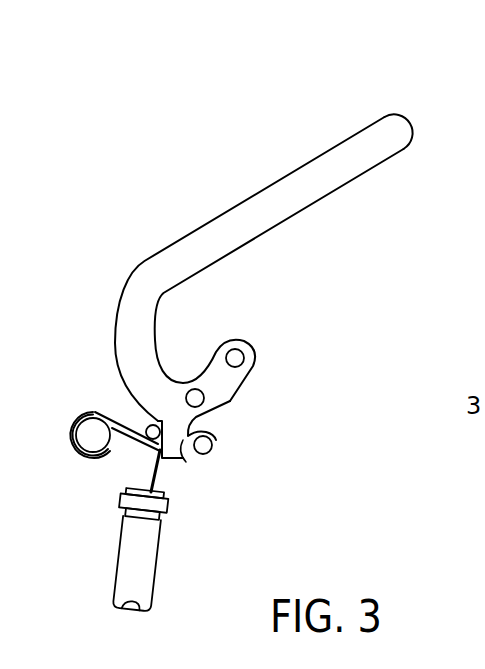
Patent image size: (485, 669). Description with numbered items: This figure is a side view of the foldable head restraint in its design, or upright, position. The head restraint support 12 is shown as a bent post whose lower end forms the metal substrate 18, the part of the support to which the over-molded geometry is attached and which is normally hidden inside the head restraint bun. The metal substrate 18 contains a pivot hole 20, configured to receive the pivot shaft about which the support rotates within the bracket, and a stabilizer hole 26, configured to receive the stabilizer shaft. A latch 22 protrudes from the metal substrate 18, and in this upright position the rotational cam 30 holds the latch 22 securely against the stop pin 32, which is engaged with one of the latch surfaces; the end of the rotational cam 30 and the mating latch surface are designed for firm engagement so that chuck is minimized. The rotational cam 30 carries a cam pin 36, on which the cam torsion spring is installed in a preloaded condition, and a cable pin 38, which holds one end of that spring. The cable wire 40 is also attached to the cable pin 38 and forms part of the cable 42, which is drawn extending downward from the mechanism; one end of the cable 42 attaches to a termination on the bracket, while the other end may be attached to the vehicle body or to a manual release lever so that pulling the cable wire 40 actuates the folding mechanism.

The head restraint support 12 is at (399, 98).
The metal substrate 18 is at (174, 382).
The pivot hole 20 is at (240, 358).
The latch 22 is at (183, 450).
The stabilizer hole 26 is at (205, 398).
The rotational cam 30 is at (122, 450).
The stop pin 32 is at (212, 445).
The cam pin 36 is at (76, 428).
The cable pin 38 is at (146, 426).
The cable wire 40 is at (162, 474).
The cable 42 is at (118, 568).